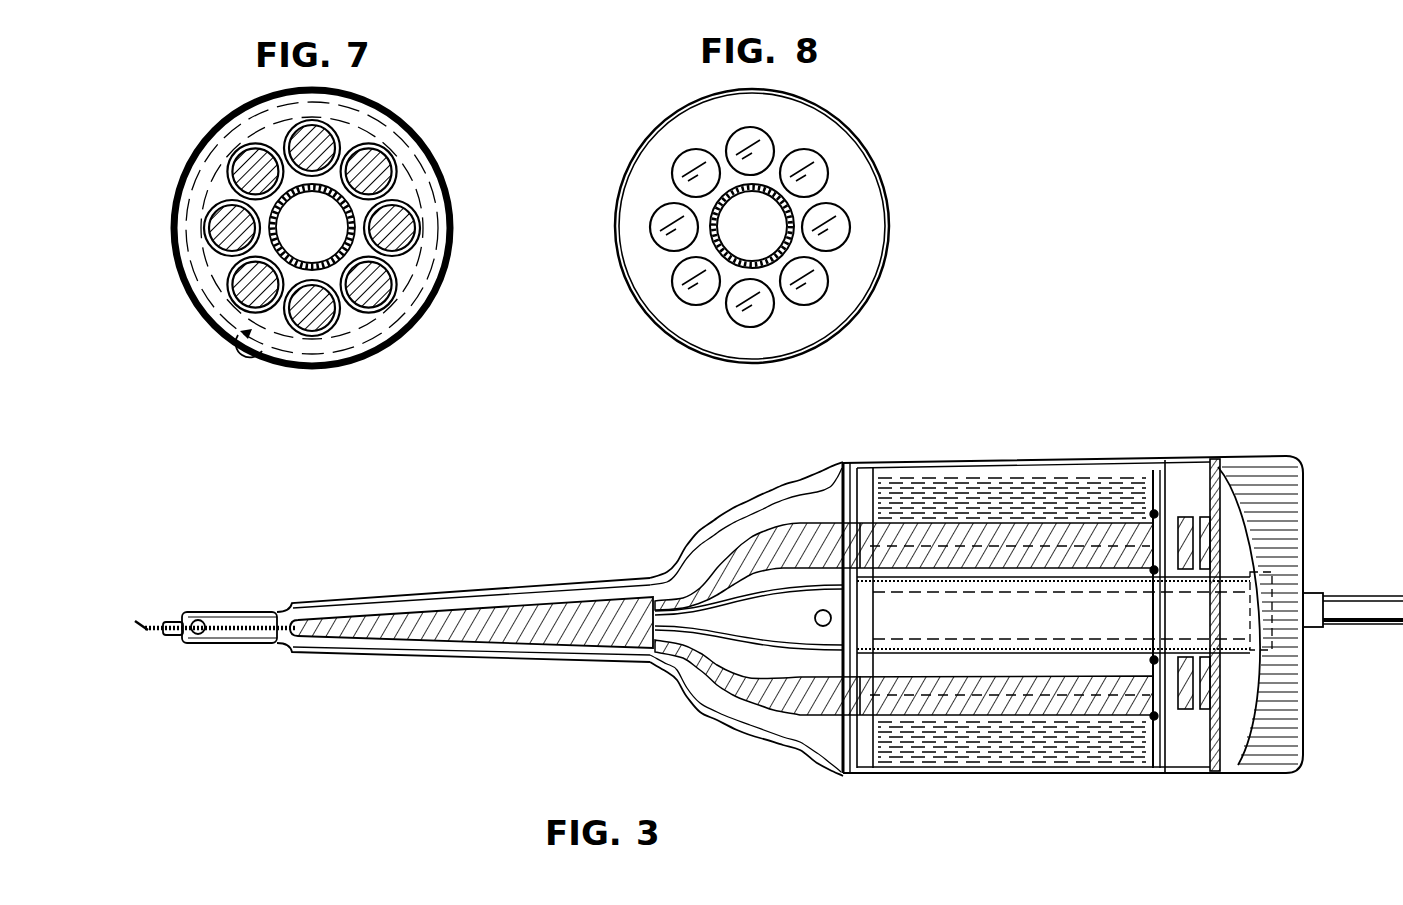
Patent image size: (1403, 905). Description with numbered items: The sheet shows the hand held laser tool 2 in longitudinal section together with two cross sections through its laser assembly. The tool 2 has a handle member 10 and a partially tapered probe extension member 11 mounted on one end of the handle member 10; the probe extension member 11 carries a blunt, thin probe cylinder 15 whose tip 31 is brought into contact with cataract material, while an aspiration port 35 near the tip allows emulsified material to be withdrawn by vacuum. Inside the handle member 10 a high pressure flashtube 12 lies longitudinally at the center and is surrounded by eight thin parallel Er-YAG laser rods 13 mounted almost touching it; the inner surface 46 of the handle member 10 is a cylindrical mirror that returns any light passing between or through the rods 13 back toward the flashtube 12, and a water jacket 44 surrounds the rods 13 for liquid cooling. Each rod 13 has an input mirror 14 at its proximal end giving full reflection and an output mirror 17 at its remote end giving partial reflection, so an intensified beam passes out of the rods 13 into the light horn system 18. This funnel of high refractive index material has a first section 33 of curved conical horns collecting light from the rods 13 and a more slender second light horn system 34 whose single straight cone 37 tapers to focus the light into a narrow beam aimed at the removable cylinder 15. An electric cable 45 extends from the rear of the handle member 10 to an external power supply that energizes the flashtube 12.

In FIG. 3, the hand held laser tool 2 is at (1240, 405).
In FIG. 8, the handle member 10 is at (862, 136).
In FIG. 3, the handle member 10 is at (1282, 747).
In FIG. 3, the probe extension member 11 is at (470, 656).
In FIG. 7, the flashtube 12 is at (330, 218).
In FIG. 8, the flashtube 12 is at (767, 217).
In FIG. 3, the flashtube 12 is at (967, 622).
In FIG. 7, the laser rods 13 is at (378, 293).
In FIG. 3, the laser rods 13 is at (927, 537).
In FIG. 8, the input mirrors 14 is at (683, 168).
In FIG. 3, the input mirrors 14 is at (1160, 514).
In FIG. 3, the probe cylinder 15 is at (232, 633).
In FIG. 3, the output mirrors 17 is at (865, 517).
In FIG. 3, the light horn system 18 is at (580, 704).
In FIG. 3, the tip 31 is at (134, 617).
In FIG. 3, the first light horn section 33 is at (395, 592).
In FIG. 3, the second light horn system 34 is at (717, 523).
In FIG. 3, the aspiration port 35 is at (199, 620).
In FIG. 3, the straight cone 37 is at (560, 612).
In FIG. 7, the water jacket 44 is at (380, 131).
In FIG. 3, the water jacket 44 is at (982, 490).
In FIG. 3, the electric cable 45 is at (1356, 600).
In FIG. 7, the inner surface 46 is at (266, 352).
In FIG. 3, the inner surface 46 is at (1088, 490).